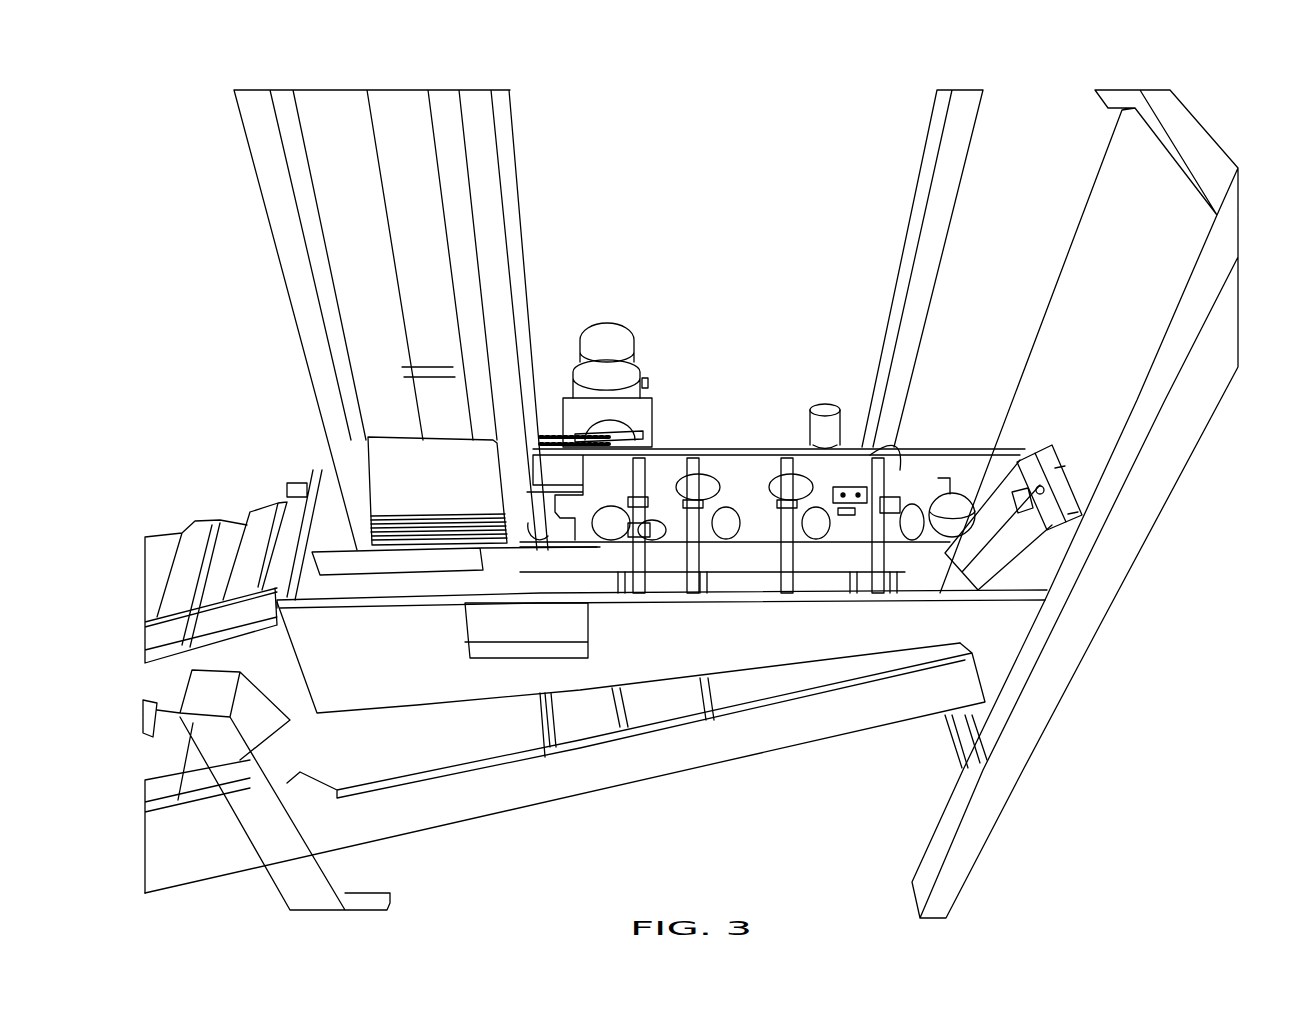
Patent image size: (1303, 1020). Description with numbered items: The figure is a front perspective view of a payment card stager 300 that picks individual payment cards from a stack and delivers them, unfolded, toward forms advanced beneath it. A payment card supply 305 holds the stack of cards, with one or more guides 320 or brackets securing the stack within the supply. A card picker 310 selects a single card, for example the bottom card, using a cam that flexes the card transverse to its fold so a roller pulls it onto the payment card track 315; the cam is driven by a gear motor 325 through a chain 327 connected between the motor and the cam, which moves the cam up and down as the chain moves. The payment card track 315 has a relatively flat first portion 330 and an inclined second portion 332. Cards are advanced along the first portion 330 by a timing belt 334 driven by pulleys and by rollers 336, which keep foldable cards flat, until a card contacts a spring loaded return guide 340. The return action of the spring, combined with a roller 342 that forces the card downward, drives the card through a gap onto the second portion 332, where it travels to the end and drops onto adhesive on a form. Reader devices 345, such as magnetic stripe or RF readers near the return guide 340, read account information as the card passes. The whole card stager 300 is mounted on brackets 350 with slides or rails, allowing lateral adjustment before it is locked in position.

The payment card stager 300 is at (1157, 835).
The payment card supply 305 is at (484, 102).
The card picker 310 is at (568, 472).
The payment card track 315 is at (690, 640).
The guides 320 is at (502, 363).
The gear motor 325 is at (628, 345).
The chain 327 is at (545, 425).
The first portion 330 is at (410, 655).
The second portion 332 is at (510, 797).
The timing belt 334 is at (564, 541).
The rollers 336 is at (803, 465).
The return guide 340 is at (1052, 493).
The roller 342 is at (960, 492).
The reader devices 345 is at (935, 575).
The brackets 350 is at (275, 771).